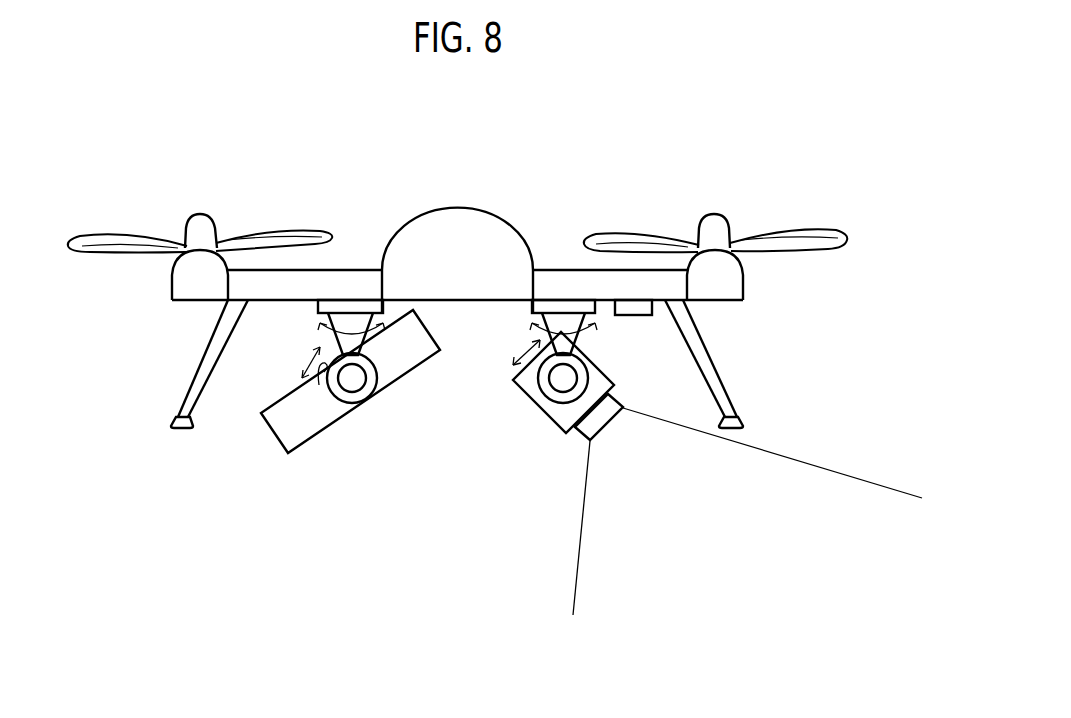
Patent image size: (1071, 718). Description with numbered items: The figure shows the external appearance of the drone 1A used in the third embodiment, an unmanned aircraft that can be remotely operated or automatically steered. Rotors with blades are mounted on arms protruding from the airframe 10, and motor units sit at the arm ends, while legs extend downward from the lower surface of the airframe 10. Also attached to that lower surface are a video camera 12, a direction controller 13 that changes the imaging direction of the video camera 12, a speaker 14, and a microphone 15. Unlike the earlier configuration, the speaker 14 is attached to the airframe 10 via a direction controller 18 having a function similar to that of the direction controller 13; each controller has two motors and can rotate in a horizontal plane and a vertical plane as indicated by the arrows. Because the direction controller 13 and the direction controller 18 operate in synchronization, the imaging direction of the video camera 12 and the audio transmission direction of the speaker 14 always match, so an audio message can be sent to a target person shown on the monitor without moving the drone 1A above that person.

The drone 1A is at (532, 186).
The airframe 10 is at (427, 210).
The video camera 12 is at (588, 437).
The direction controller 13 is at (538, 405).
The speaker 14 is at (273, 435).
The microphone 15 is at (627, 316).
The direction controller 18 is at (319, 385).